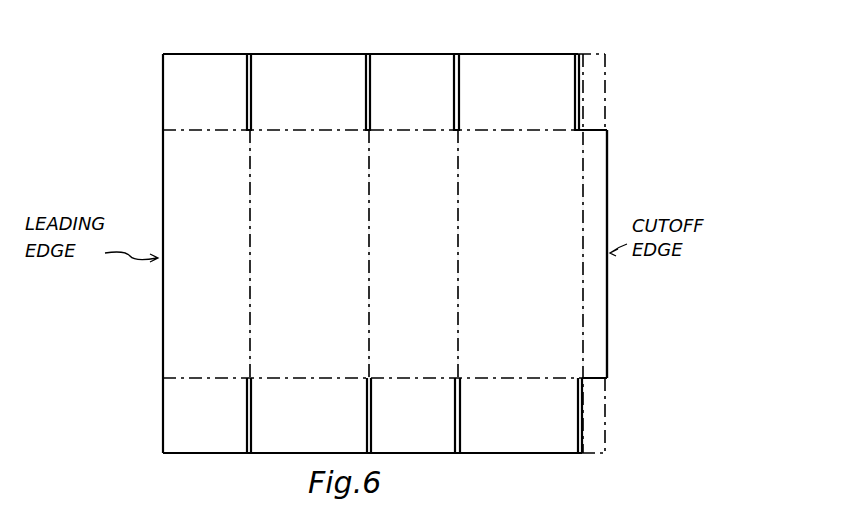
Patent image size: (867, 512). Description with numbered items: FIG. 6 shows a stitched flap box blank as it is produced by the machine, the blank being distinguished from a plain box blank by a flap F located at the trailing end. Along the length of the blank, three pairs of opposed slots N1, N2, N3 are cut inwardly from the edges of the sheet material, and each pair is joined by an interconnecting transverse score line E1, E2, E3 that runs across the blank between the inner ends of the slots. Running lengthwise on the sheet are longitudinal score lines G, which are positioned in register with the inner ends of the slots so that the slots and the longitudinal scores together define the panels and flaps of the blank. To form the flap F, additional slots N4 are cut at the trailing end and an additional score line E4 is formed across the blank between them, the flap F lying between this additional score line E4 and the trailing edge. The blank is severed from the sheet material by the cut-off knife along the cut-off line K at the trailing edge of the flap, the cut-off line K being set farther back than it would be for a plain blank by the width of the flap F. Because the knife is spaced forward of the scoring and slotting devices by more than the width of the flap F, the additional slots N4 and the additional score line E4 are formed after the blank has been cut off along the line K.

The slots N1 is at (251, 102).
The slots N2 is at (371, 103).
The slots N3 is at (460, 100).
The additional slots N4 is at (579, 100).
The score line E1 is at (250, 252).
The score line E2 is at (369, 250).
The score line E3 is at (458, 245).
The additional score line E4 is at (583, 250).
The longitudinal score lines G is at (314, 131).
The cut-off line K is at (608, 160).
The flap F is at (593, 205).